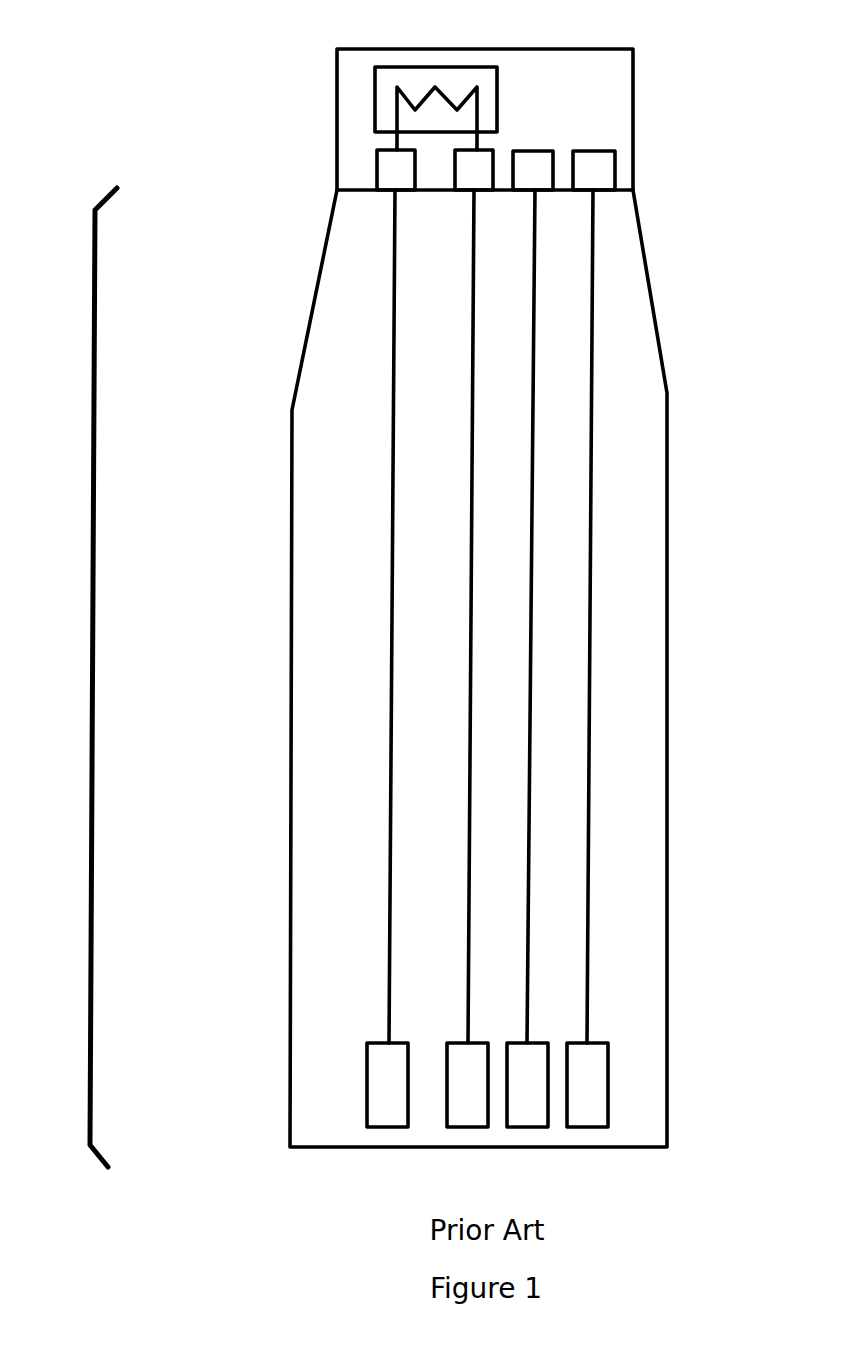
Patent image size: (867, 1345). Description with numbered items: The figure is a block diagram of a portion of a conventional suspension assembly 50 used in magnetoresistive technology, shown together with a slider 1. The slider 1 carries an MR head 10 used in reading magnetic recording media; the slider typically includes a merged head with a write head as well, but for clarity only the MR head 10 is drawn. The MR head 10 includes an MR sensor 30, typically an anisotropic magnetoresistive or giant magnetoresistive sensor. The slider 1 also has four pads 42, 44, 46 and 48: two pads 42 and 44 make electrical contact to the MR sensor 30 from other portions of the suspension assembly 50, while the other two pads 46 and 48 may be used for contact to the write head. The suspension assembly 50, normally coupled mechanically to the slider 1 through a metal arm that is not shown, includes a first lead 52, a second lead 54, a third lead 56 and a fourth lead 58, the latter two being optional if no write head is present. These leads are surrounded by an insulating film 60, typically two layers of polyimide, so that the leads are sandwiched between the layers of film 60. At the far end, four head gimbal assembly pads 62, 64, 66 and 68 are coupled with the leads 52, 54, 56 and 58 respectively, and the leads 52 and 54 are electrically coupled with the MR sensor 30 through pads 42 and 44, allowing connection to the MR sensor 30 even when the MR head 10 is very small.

The slider 1 is at (615, 42).
The MR head 10 is at (455, 67).
The MR sensor 30 is at (373, 107).
The pad 42 is at (375, 170).
The pad 44 is at (498, 150).
The pad 46 is at (556, 152).
The pad 48 is at (615, 170).
The suspension assembly 50 is at (92, 677).
The first lead 52 is at (392, 495).
The second lead 54 is at (472, 433).
The third lead 56 is at (533, 393).
The fourth lead 58 is at (592, 533).
The insulating film 60 is at (667, 688).
The head gimbal assembly pad 62 is at (367, 1105).
The head gimbal assembly pad 64 is at (447, 1050).
The head gimbal assembly pad 66 is at (548, 1050).
The head gimbal assembly pad 68 is at (608, 1105).